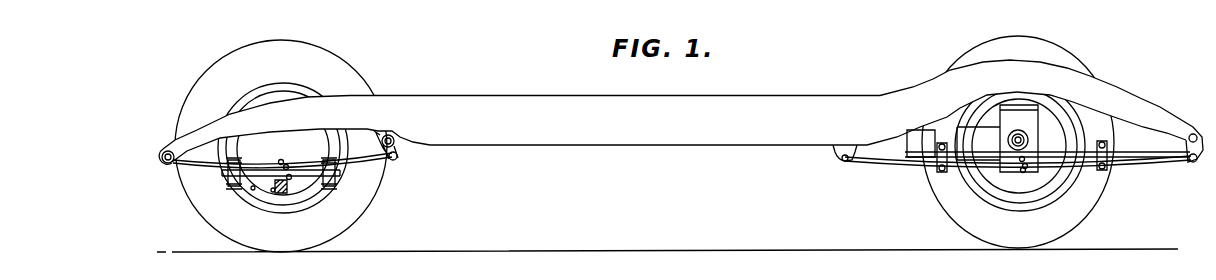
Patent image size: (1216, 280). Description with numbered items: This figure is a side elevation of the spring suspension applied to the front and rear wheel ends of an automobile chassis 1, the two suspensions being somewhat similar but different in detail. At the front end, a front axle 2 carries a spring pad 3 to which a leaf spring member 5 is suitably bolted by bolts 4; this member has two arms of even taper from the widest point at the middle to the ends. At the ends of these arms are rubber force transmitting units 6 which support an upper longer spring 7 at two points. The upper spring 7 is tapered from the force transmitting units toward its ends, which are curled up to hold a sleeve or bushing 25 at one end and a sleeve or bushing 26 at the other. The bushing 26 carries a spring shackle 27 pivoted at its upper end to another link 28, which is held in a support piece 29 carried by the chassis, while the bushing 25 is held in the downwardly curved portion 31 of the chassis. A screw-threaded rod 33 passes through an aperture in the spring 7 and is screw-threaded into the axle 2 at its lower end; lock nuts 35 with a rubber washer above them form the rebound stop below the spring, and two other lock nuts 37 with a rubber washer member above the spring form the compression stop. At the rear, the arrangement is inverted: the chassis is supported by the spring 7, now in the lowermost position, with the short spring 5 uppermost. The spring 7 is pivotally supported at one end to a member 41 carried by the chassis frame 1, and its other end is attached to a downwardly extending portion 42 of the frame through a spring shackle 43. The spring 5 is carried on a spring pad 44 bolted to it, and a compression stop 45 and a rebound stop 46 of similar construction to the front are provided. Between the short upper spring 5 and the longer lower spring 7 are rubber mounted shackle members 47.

The automobile chassis 1 is at (679, 112).
The front axle 2 is at (278, 196).
The spring pad 3 is at (300, 185).
The bolts 4 is at (273, 190).
The leaf spring member 5 is at (253, 188).
The rubber force transmitting units 6 is at (226, 173).
The upper longer spring 7 is at (200, 167).
The sleeve or bushing 25 is at (163, 156).
The sleeve or bushing 26 is at (398, 157).
The spring shackle 27 is at (383, 153).
The link 28 is at (397, 140).
The support piece 29 is at (380, 130).
The downwardly curved portion 31 is at (197, 130).
The screw-threaded rod 33 is at (281, 160).
The lock nuts 35 is at (287, 165).
The lock nuts 37 is at (290, 175).
The member 41 is at (840, 155).
The downwardly extending portion 42 is at (1168, 110).
The spring shackle 43 is at (1189, 147).
The spring pad 44 is at (1008, 139).
The compression stop 45 is at (1025, 160).
The rebound stop 46 is at (1027, 168).
The rubber mounted shackle members 47 is at (938, 170).